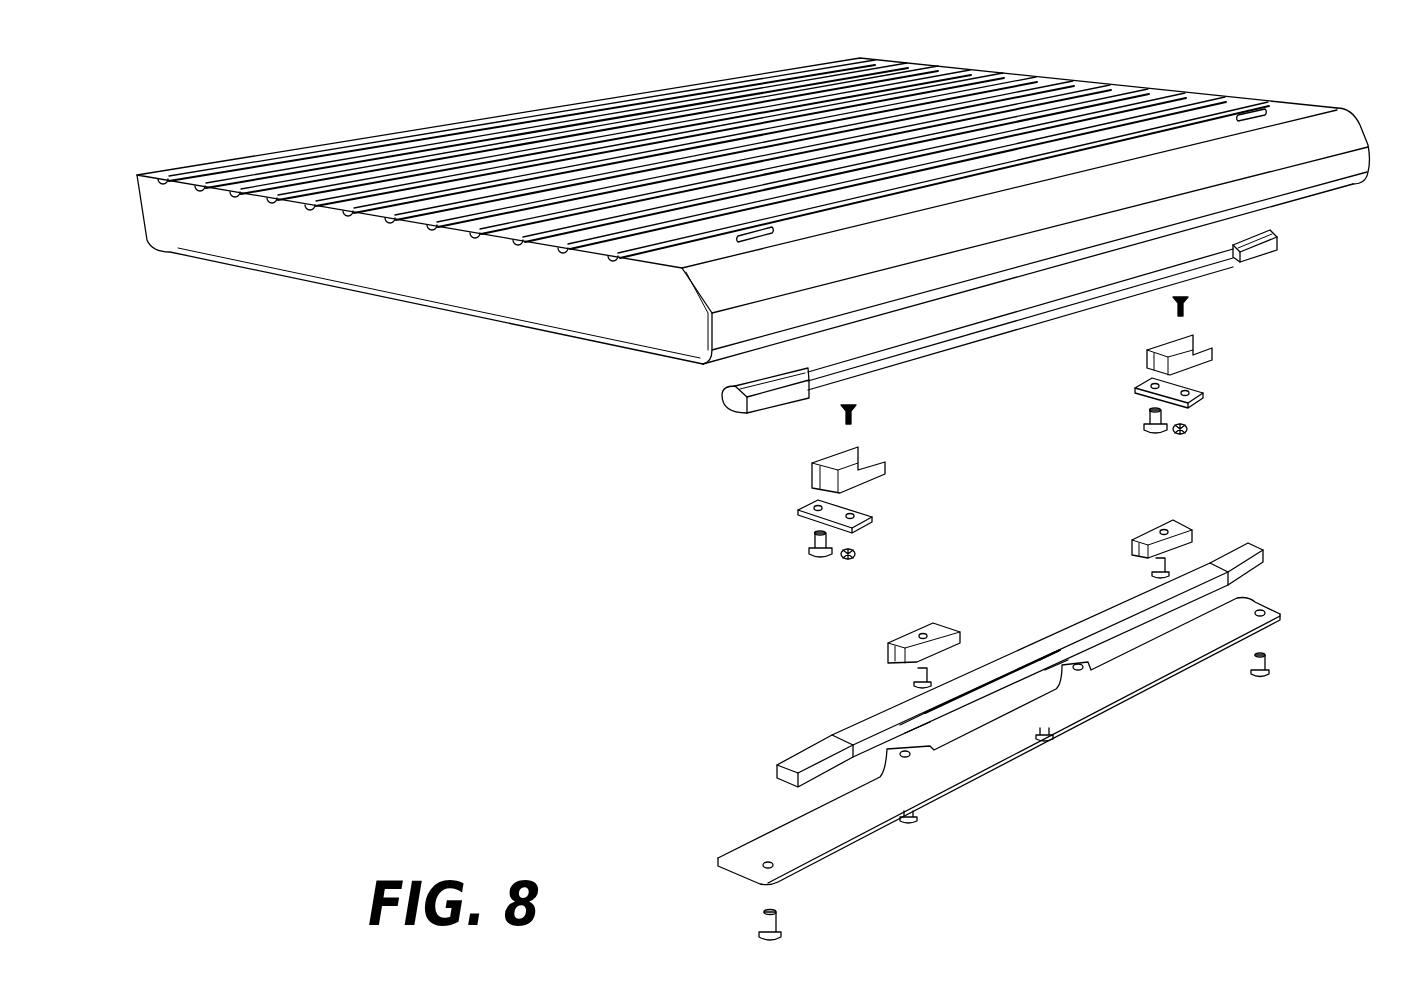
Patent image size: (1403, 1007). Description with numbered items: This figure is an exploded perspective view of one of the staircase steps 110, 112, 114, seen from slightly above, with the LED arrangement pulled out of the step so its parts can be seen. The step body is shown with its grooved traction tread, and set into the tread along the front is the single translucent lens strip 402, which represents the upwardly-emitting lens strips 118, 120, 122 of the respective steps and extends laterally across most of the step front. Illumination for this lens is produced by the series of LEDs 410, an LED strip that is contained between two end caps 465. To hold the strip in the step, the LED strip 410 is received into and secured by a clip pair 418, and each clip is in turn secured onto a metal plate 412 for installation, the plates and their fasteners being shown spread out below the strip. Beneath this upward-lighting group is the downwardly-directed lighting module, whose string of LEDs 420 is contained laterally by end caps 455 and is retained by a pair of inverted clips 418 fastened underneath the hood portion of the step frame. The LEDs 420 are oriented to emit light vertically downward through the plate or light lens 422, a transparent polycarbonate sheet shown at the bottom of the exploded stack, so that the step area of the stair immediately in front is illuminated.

The step 110 is at (753, 198).
The step 112 is at (753, 198).
The step 114 is at (512, 118).
The single lens strip 402 is at (923, 137).
The first upwardly-emitting lens strip 118 is at (923, 137).
The second upwardly-emitting illumination lens strip 120 is at (923, 137).
The aperture 122 is at (775, 232).
The LEDs 410 is at (1000, 316).
The end caps 465 is at (728, 403).
The clip pair 418 is at (880, 470).
The metal plate 412 is at (805, 512).
The string of LEDs 420 is at (1185, 582).
The end caps 455 is at (790, 770).
The plate/light lens 422 is at (990, 752).